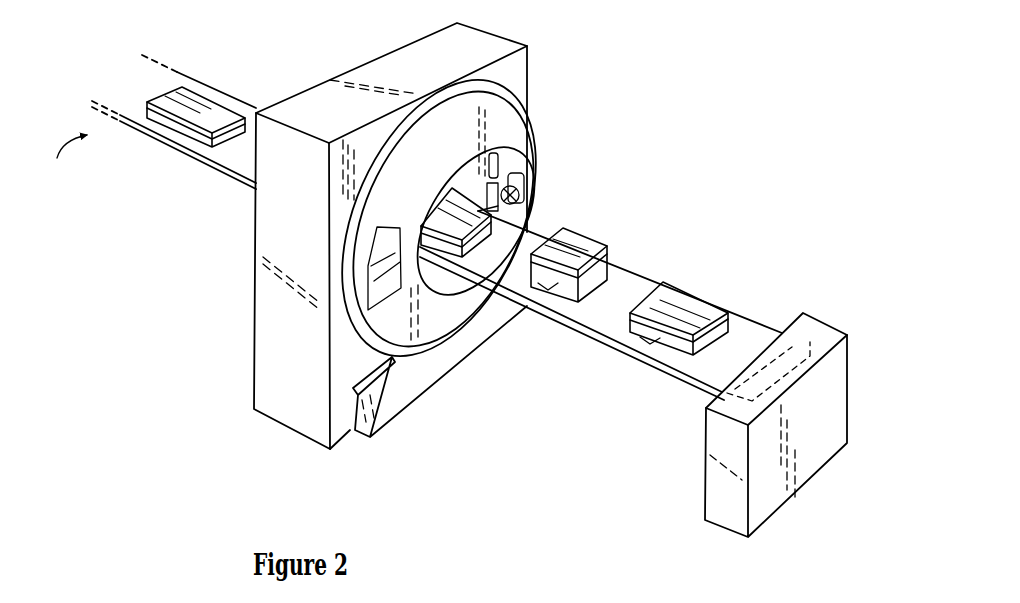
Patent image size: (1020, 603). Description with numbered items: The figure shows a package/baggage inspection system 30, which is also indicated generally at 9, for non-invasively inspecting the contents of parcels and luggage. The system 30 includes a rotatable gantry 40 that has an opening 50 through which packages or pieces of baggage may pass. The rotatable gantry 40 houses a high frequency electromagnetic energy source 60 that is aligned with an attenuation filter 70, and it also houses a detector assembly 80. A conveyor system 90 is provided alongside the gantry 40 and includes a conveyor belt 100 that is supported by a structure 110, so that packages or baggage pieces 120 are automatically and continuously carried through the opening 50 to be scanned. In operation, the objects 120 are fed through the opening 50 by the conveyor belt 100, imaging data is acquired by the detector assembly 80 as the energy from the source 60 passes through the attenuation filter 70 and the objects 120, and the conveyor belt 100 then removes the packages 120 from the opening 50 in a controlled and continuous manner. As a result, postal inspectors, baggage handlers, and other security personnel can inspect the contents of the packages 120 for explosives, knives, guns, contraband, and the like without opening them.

The baggage screening system 9 is at (835, 301).
The package/baggage inspection system 30 is at (708, 158).
The rotatable gantry 40 is at (526, 144).
The opening 50 is at (500, 164).
The high frequency electromagnetic energy source 60 is at (526, 192).
The attenuation filter 70 is at (499, 210).
The detector assembly 80 is at (386, 300).
The conveyor system 90 is at (64, 160).
The conveyor belt 100 is at (634, 276).
The structure 110 is at (838, 402).
The packages or baggage pieces 120 is at (208, 102).